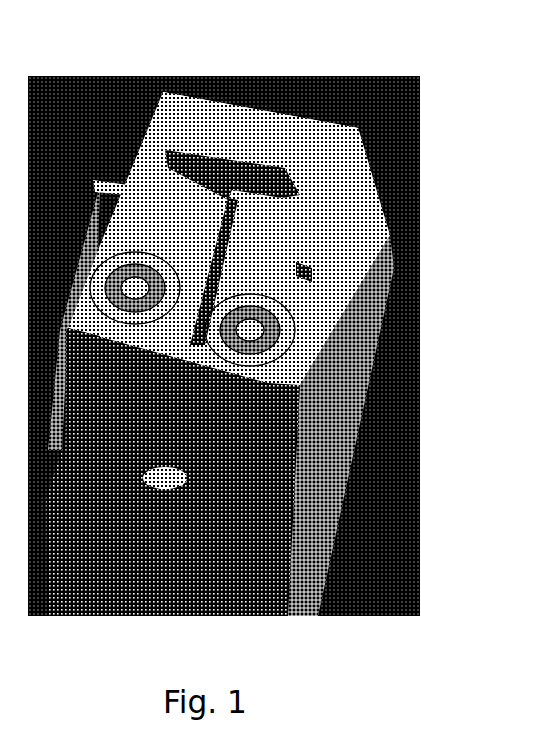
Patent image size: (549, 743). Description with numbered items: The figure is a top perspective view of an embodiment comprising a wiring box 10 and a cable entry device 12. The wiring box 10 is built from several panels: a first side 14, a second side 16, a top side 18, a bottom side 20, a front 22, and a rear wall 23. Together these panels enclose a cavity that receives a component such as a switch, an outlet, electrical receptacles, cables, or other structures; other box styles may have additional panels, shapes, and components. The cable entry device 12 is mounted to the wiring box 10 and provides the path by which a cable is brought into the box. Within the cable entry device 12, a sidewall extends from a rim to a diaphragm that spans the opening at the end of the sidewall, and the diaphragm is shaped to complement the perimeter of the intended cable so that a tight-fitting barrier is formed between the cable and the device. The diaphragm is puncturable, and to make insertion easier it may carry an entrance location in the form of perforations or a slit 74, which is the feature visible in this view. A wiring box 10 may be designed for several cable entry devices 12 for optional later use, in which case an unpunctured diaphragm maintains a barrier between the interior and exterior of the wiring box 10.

The wiring box 10 is at (279, 333).
The cable entry device 12 is at (90, 276).
The first side 14 is at (349, 445).
The second side 16 is at (63, 453).
The top side 18 is at (258, 147).
The bottom side 20 is at (141, 577).
The front 22 is at (299, 112).
The rear wall 23 is at (113, 502).
The slit 74 is at (128, 317).